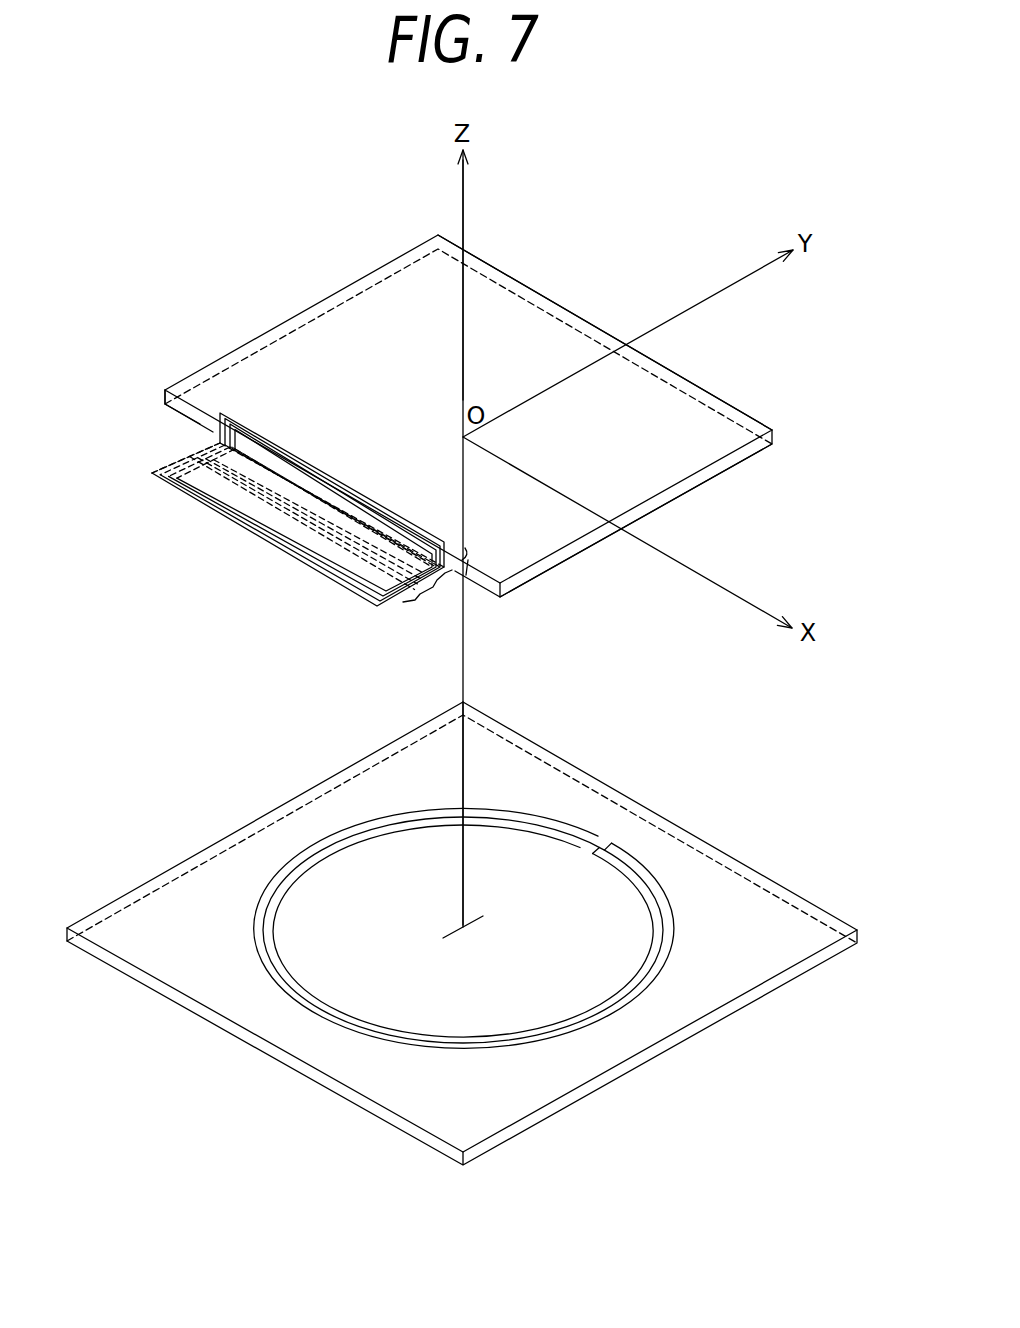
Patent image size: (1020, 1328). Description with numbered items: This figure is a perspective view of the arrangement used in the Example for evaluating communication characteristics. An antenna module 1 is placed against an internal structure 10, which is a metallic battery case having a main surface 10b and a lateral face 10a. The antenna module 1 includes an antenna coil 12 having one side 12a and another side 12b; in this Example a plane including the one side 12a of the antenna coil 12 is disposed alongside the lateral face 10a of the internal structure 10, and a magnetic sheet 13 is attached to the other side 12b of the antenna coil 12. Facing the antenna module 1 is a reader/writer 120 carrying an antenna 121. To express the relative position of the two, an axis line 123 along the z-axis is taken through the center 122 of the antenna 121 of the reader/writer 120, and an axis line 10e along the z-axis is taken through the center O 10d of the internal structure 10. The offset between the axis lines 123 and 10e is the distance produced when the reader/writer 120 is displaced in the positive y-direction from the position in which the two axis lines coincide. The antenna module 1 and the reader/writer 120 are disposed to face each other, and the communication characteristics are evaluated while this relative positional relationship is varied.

The antenna module 1 is at (190, 497).
The internal structure 10 is at (353, 335).
The lateral face 10a is at (165, 397).
The main surface 10b is at (543, 577).
The center (O) 10d is at (462, 437).
The axis line 10e is at (466, 212).
The antenna coil 12 is at (455, 608).
The one side 12a is at (484, 590).
The other side 12b is at (428, 601).
The magnetic sheet 13 is at (160, 462).
The reader/writer 120 is at (558, 1108).
The antenna 121 is at (620, 1007).
The center 122 is at (458, 925).
The axis line 123 is at (468, 766).